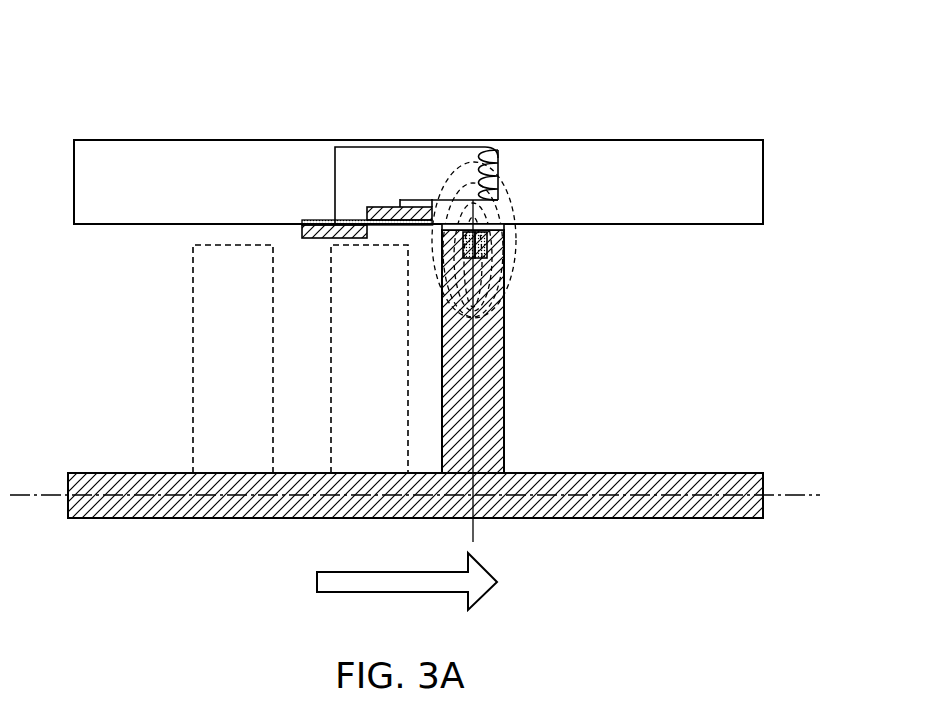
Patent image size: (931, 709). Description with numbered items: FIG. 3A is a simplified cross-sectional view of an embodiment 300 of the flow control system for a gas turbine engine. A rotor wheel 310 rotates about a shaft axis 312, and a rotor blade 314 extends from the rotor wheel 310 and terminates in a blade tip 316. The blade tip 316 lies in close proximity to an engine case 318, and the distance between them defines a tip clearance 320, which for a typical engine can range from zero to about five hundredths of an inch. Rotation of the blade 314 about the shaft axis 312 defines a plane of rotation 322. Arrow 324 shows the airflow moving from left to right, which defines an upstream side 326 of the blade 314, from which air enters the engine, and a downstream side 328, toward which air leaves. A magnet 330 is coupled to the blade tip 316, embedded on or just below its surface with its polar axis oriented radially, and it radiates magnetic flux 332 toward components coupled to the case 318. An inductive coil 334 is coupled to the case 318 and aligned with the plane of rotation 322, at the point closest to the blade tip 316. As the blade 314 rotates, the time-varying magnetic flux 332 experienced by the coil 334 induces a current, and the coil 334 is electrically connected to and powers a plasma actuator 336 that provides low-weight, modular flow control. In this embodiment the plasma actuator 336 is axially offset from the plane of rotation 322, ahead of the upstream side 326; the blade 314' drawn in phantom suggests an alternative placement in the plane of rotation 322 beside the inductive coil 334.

The embodiment of the flow control system 300 is at (110, 78).
The rotor wheel 310 is at (638, 483).
The shaft axis 312 is at (795, 496).
The rotor blade 314 is at (428, 351).
The blade drawn in phantom 314' is at (342, 359).
The blade tip 316 is at (488, 232).
The engine case 318 is at (693, 152).
The tip clearance 320 is at (438, 226).
The plane of rotation 322 is at (478, 530).
The arrow 324 is at (482, 580).
The upstream side 326 is at (442, 405).
The downstream side 328 is at (505, 405).
The magnet 330 is at (487, 245).
The magnetic flux 332 is at (512, 182).
The inductive coil 334 is at (498, 150).
The plasma actuator 336 is at (282, 215).